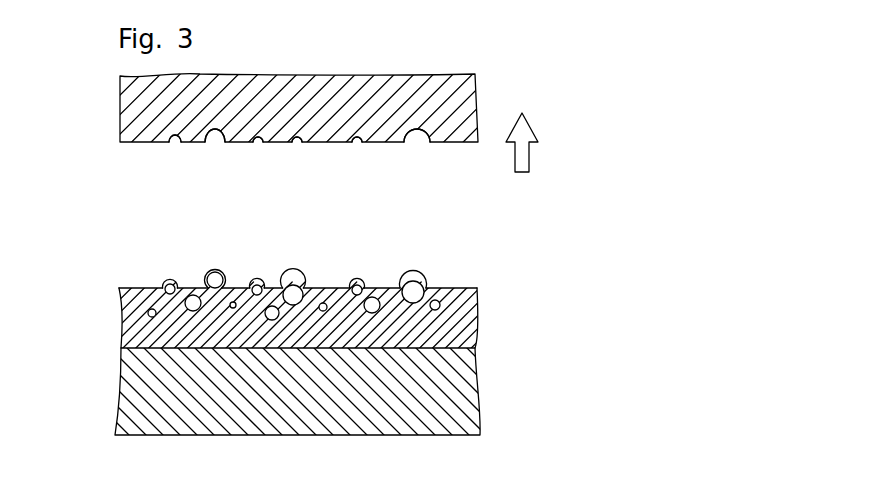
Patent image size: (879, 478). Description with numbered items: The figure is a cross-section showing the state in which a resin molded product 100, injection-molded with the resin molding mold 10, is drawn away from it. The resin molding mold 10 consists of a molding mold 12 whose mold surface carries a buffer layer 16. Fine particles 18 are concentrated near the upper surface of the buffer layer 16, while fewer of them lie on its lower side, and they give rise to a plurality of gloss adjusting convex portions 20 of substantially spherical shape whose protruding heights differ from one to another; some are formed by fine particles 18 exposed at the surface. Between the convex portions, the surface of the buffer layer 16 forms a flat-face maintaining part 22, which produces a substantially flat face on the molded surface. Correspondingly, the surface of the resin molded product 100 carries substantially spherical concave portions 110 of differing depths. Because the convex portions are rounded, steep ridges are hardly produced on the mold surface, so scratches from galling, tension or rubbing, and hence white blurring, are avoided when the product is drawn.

The resin molded product 100 is at (467, 92).
The concave portions 110 is at (217, 143).
The resin molding mold 10 is at (278, 313).
The molding mold 12 is at (465, 375).
The buffer layer 16 is at (470, 323).
The fine particles 18 is at (167, 284).
The gloss adjusting convex portions 20 is at (209, 273).
The flat-face maintaining part 22 is at (127, 280).